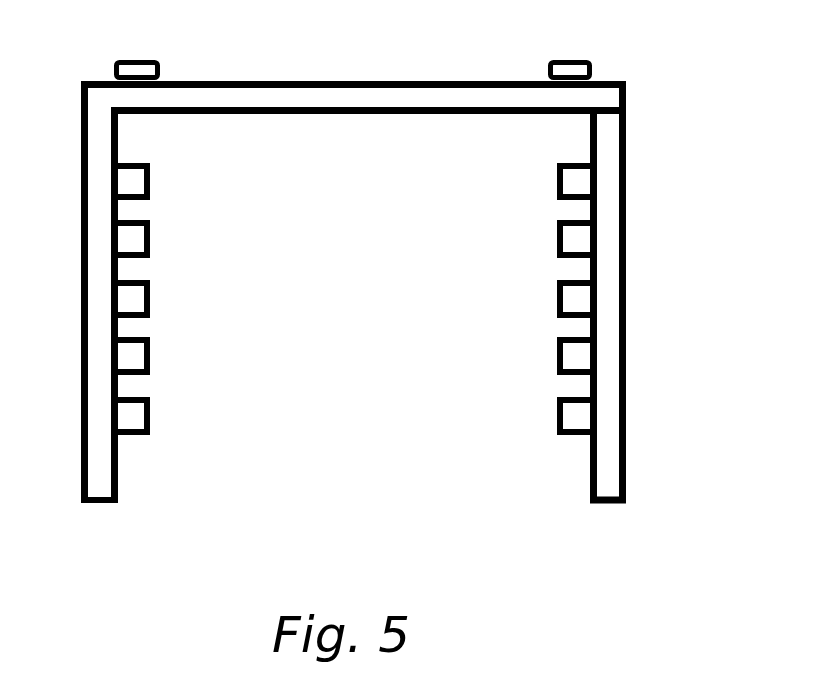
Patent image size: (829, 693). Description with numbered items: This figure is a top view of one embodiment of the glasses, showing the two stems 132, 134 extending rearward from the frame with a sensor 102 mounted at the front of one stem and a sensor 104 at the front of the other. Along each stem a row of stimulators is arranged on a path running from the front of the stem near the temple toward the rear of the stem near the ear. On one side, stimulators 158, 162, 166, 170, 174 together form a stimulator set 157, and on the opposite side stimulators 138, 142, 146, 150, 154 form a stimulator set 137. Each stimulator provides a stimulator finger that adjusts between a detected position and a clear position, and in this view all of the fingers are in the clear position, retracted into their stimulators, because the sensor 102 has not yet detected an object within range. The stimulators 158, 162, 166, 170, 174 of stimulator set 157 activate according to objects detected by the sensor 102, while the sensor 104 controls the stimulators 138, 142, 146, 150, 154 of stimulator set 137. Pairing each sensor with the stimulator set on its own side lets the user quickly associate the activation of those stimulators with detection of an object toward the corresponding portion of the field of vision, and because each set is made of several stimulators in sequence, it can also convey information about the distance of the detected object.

The sensor 102 is at (137, 58).
The sensor 104 is at (595, 66).
The stem 132 is at (95, 504).
The stem 134 is at (608, 504).
The stimulator set 137 is at (552, 454).
The stimulator 138 is at (557, 180).
The stimulator 142 is at (557, 238).
The stimulator 146 is at (557, 294).
The stimulator 150 is at (557, 353).
The stimulator 154 is at (557, 418).
The stimulator set 157 is at (147, 455).
The first stimulator 158 is at (150, 178).
The stimulator 162 is at (152, 238).
The stimulator 166 is at (150, 297).
The stimulator 170 is at (150, 356).
The stimulator 174 is at (153, 412).